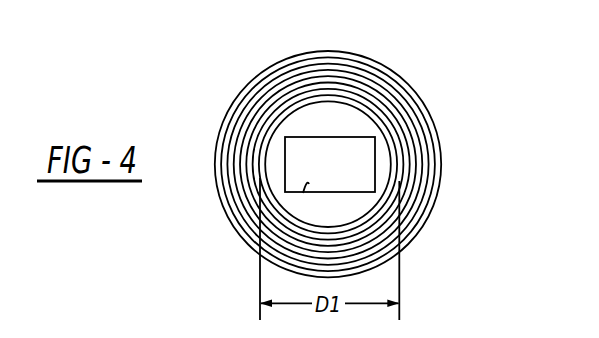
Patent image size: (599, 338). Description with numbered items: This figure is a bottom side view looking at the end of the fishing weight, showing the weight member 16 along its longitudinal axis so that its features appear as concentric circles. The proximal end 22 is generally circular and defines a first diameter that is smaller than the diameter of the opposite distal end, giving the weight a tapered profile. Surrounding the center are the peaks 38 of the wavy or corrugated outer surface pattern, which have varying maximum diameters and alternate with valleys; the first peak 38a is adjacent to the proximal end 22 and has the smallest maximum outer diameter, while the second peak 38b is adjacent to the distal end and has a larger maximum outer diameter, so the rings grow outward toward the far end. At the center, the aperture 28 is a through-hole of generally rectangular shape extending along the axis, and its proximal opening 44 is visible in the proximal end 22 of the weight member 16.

The weight member 16 is at (438, 91).
The proximal end 22 is at (306, 115).
The aperture 28 is at (340, 153).
The peaks 38 is at (428, 121).
The first peak 38a is at (268, 126).
The second peak 38b is at (442, 182).
The proximal opening 44 is at (309, 184).